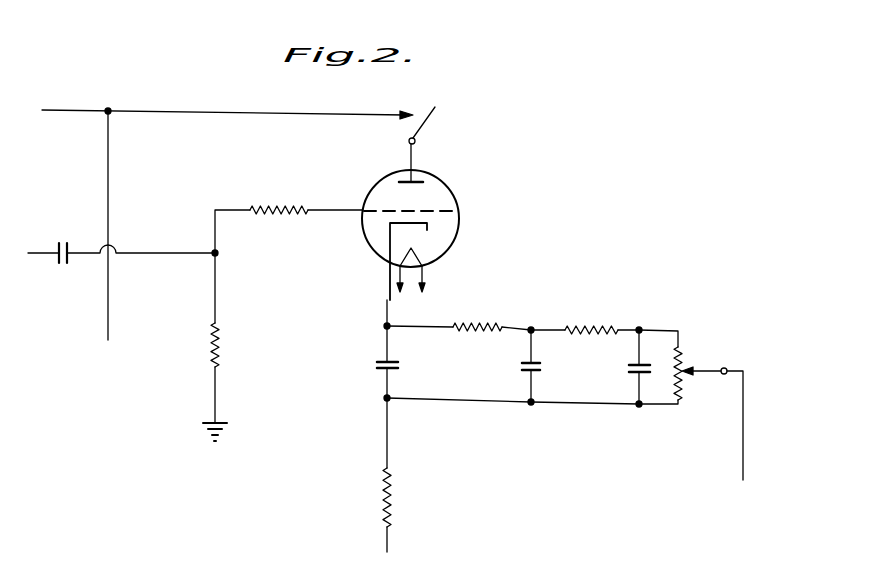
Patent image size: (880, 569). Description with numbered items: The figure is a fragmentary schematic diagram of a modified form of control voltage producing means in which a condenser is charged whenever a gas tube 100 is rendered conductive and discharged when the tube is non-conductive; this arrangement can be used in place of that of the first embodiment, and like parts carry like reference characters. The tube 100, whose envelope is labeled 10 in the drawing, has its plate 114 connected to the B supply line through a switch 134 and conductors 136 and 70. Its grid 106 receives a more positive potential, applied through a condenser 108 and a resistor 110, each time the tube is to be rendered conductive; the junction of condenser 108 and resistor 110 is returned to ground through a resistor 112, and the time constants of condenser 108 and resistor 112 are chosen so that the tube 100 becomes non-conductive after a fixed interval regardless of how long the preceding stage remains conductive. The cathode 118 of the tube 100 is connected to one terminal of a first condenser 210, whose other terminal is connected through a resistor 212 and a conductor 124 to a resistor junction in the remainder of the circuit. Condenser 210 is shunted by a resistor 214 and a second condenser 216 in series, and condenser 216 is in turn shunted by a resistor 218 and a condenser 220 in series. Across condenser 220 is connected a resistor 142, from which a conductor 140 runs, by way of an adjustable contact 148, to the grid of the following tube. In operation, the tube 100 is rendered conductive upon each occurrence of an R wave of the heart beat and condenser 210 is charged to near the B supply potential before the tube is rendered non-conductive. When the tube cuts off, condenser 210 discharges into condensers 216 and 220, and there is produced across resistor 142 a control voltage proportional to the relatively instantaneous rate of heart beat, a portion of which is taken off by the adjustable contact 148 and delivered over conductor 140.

The conductor 136 is at (160, 110).
The conductor 70 is at (108, 176).
The condenser 108 is at (60, 266).
The resistor 110 is at (273, 206).
The resistor 112 is at (220, 340).
The electron discharge tube 10 is at (378, 166).
The switch 134 is at (420, 131).
The plate 114 is at (425, 173).
The grid 106 is at (432, 208).
The cathode 118 is at (418, 229).
The gas tube 100 is at (443, 257).
The first condenser 210 is at (382, 370).
The resistor 212 is at (389, 497).
The conductor 124 is at (388, 550).
The resistor 214 is at (480, 307).
The second condenser 216 is at (522, 363).
The resistor 218 is at (590, 326).
The condenser 220 is at (629, 368).
The resistor 142 is at (683, 345).
The adjustable contact 148 is at (711, 368).
The conductor 140 is at (743, 462).